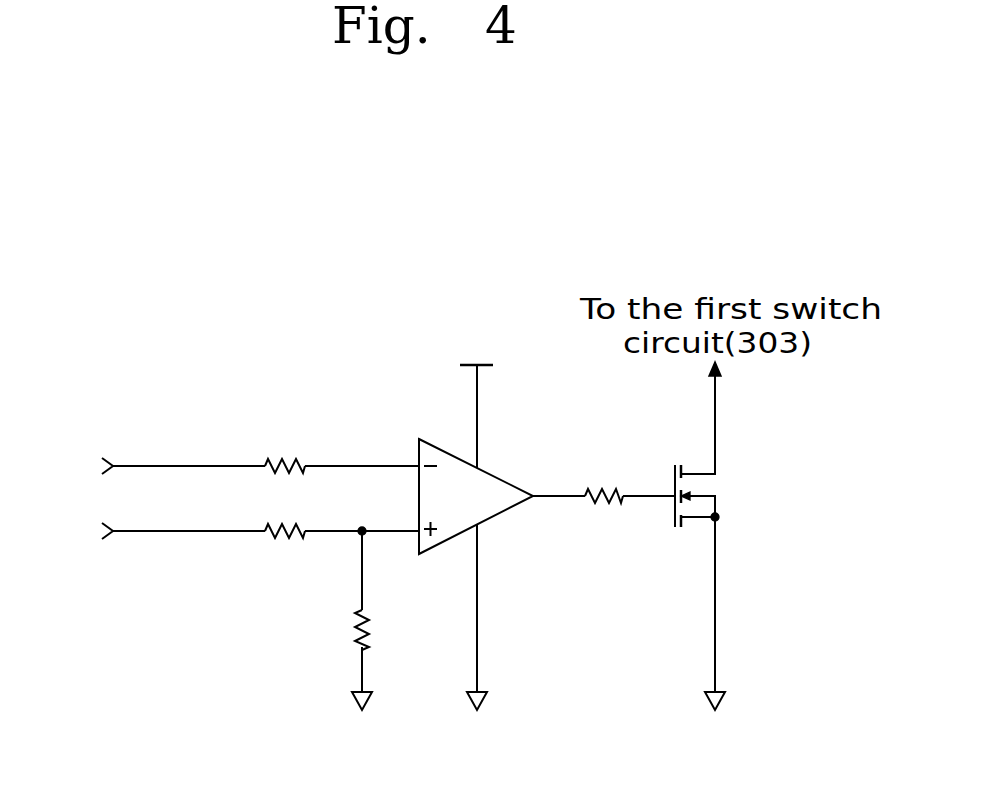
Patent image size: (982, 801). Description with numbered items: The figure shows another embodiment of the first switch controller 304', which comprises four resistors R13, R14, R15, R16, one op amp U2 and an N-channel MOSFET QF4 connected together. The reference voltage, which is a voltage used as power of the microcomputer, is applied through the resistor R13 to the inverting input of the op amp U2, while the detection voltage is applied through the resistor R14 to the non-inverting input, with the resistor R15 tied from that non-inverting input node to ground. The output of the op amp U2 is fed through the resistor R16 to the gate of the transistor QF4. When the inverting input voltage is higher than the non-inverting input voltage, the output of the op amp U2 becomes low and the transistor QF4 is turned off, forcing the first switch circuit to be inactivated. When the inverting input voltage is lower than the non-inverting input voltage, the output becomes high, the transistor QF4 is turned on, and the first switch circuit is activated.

The first switch controller 304' is at (151, 369).
The resistor R13 is at (286, 448).
The resistor R14 is at (286, 511).
The resistor R15 is at (389, 620).
The resistor R16 is at (606, 478).
The op amp U2 is at (507, 478).
The N-channel MOSFET QF4 is at (725, 536).